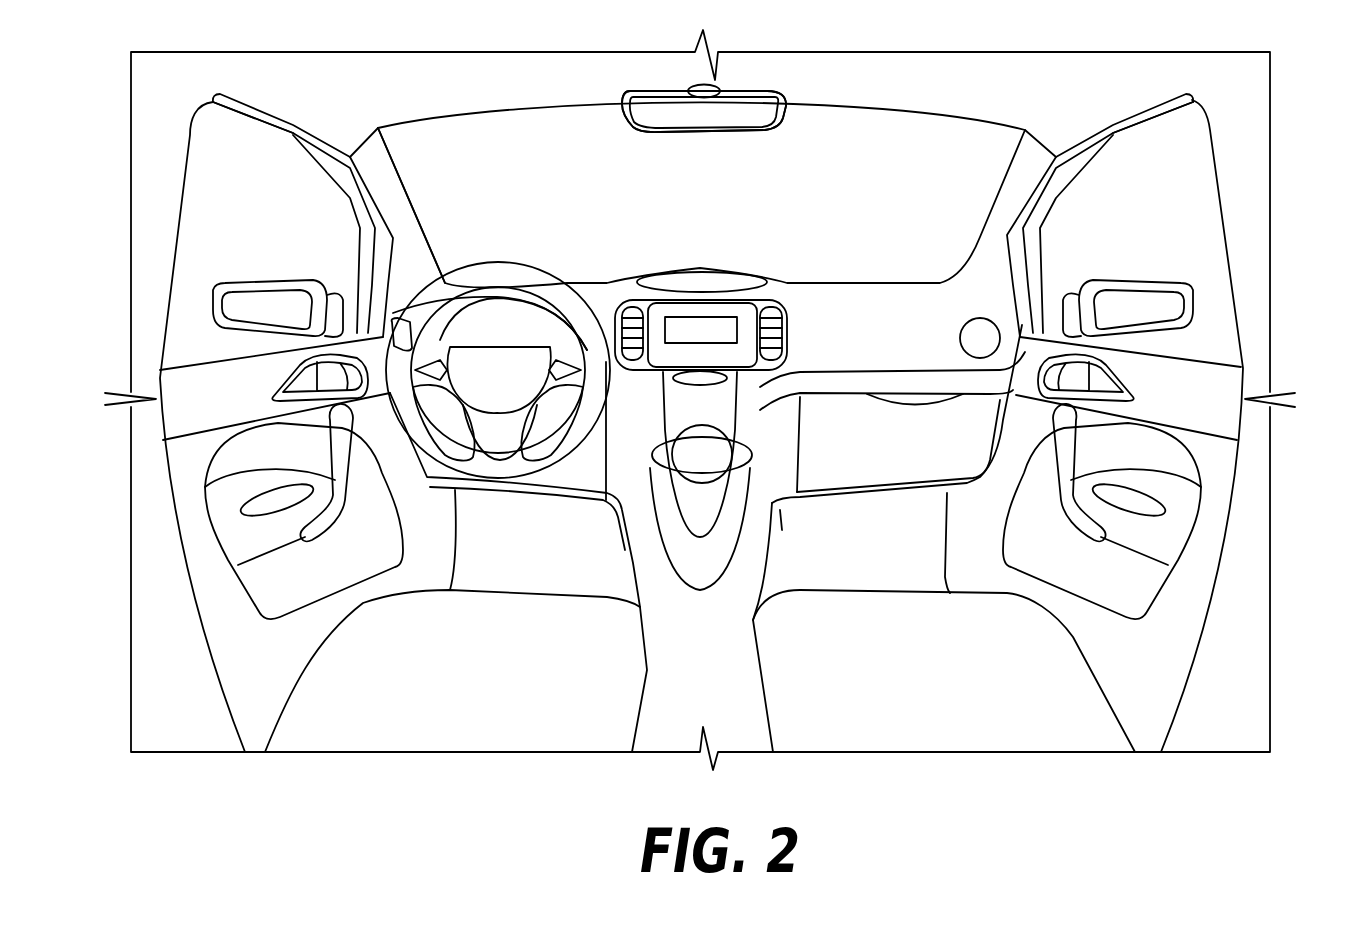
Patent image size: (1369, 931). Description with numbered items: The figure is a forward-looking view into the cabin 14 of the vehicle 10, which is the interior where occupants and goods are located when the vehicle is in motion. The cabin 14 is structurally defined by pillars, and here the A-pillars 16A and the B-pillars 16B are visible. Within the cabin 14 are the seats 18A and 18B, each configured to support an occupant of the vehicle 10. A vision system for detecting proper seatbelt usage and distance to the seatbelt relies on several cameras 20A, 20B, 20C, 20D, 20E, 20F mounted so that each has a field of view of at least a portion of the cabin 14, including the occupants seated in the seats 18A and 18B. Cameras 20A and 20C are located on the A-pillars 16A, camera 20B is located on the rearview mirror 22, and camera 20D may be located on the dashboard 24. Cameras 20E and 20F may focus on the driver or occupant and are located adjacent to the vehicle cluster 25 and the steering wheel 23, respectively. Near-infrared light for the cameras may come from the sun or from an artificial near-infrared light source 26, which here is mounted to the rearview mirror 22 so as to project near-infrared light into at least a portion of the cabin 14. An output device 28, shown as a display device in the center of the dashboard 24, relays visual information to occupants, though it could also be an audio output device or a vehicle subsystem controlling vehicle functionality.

The vehicle 10 is at (1208, 703).
The cabin 14 is at (878, 198).
The A-pillars 16A is at (375, 190).
The B-pillars 16B is at (156, 420).
The seat 18A is at (440, 682).
The seat 18B is at (983, 683).
The camera 20A is at (357, 160).
The camera 20B is at (706, 134).
The camera 20C is at (1040, 160).
The camera 20D is at (700, 262).
The camera 20E is at (512, 292).
The camera 20F is at (478, 316).
The rearview mirror 22 is at (625, 98).
The steering wheel 23 is at (432, 440).
The dashboard 24 is at (598, 285).
The vehicle cluster 25 is at (470, 318).
The near-infrared light source 26 is at (698, 84).
The output device 28 is at (726, 325).